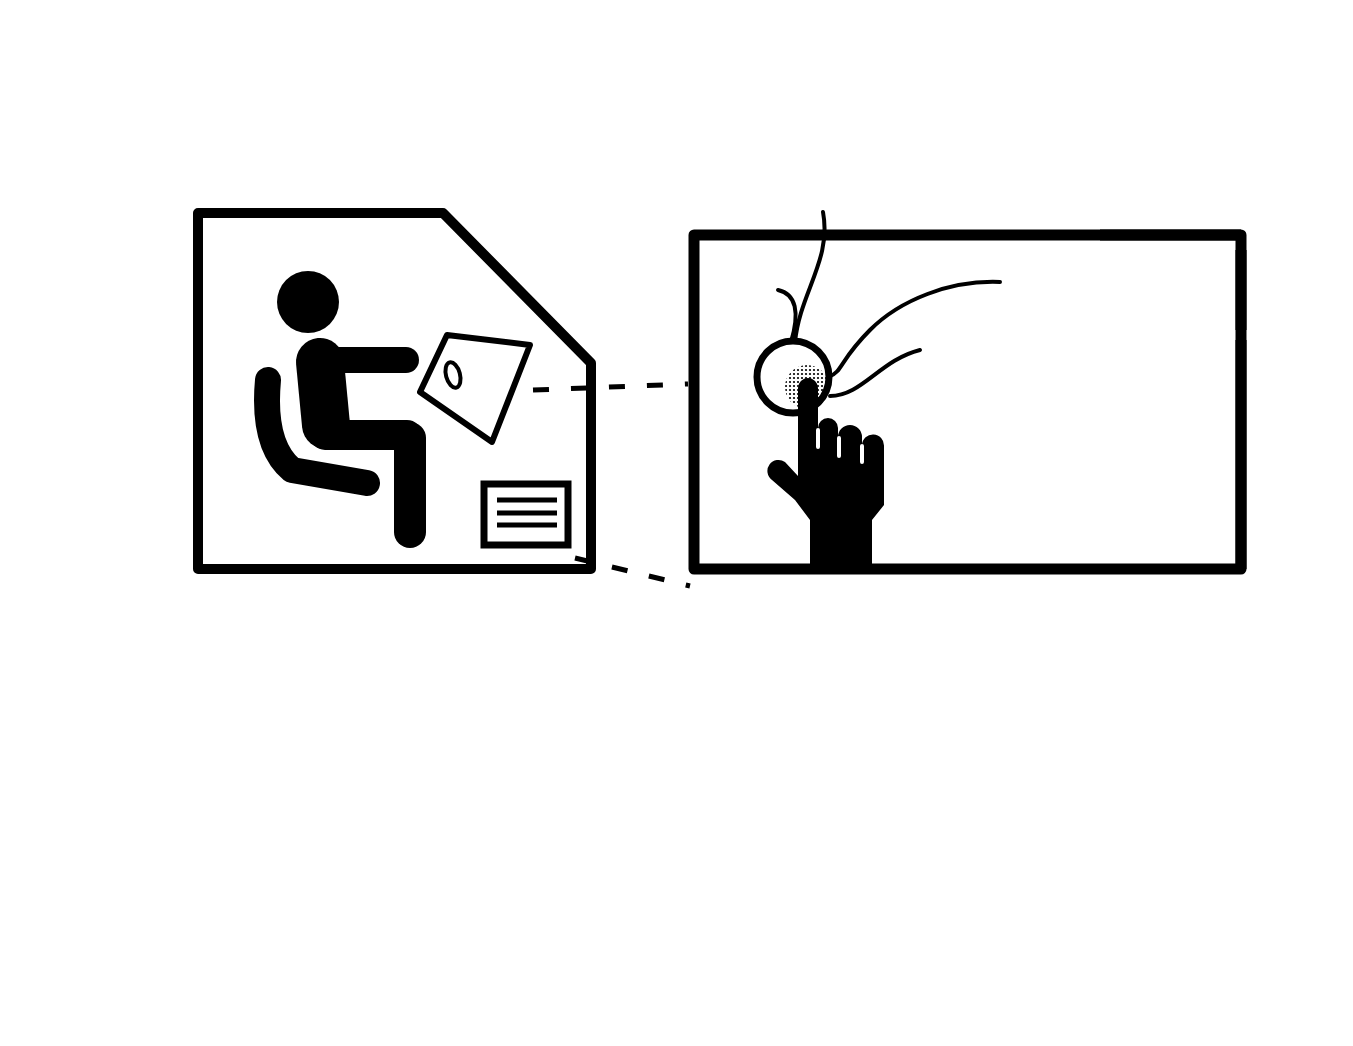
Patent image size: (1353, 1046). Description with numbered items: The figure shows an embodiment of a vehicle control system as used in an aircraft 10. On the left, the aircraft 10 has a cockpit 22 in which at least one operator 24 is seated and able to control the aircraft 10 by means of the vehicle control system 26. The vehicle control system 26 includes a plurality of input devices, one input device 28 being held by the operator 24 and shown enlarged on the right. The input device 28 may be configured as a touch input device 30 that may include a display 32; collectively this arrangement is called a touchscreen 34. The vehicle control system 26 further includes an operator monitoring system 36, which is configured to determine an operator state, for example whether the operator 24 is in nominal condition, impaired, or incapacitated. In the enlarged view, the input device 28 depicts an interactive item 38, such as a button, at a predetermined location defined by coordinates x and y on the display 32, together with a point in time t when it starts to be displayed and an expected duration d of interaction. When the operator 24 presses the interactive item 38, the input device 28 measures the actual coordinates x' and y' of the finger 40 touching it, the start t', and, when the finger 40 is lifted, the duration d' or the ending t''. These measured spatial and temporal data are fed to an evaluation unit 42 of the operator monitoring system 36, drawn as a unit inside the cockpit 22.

The aircraft 10 is at (163, 123).
The cockpit 22 is at (317, 182).
The operator 24 is at (283, 347).
The vehicle control system 26 is at (156, 504).
The input device 28 is at (510, 340).
The touch input device 30 is at (1182, 232).
The display 32 is at (1214, 290).
The touchscreen 34 is at (1247, 377).
The operator monitoring system 36 is at (460, 618).
The interactive item 38 is at (790, 356).
The finger 40 is at (797, 408).
The evaluation unit 42 is at (533, 548).